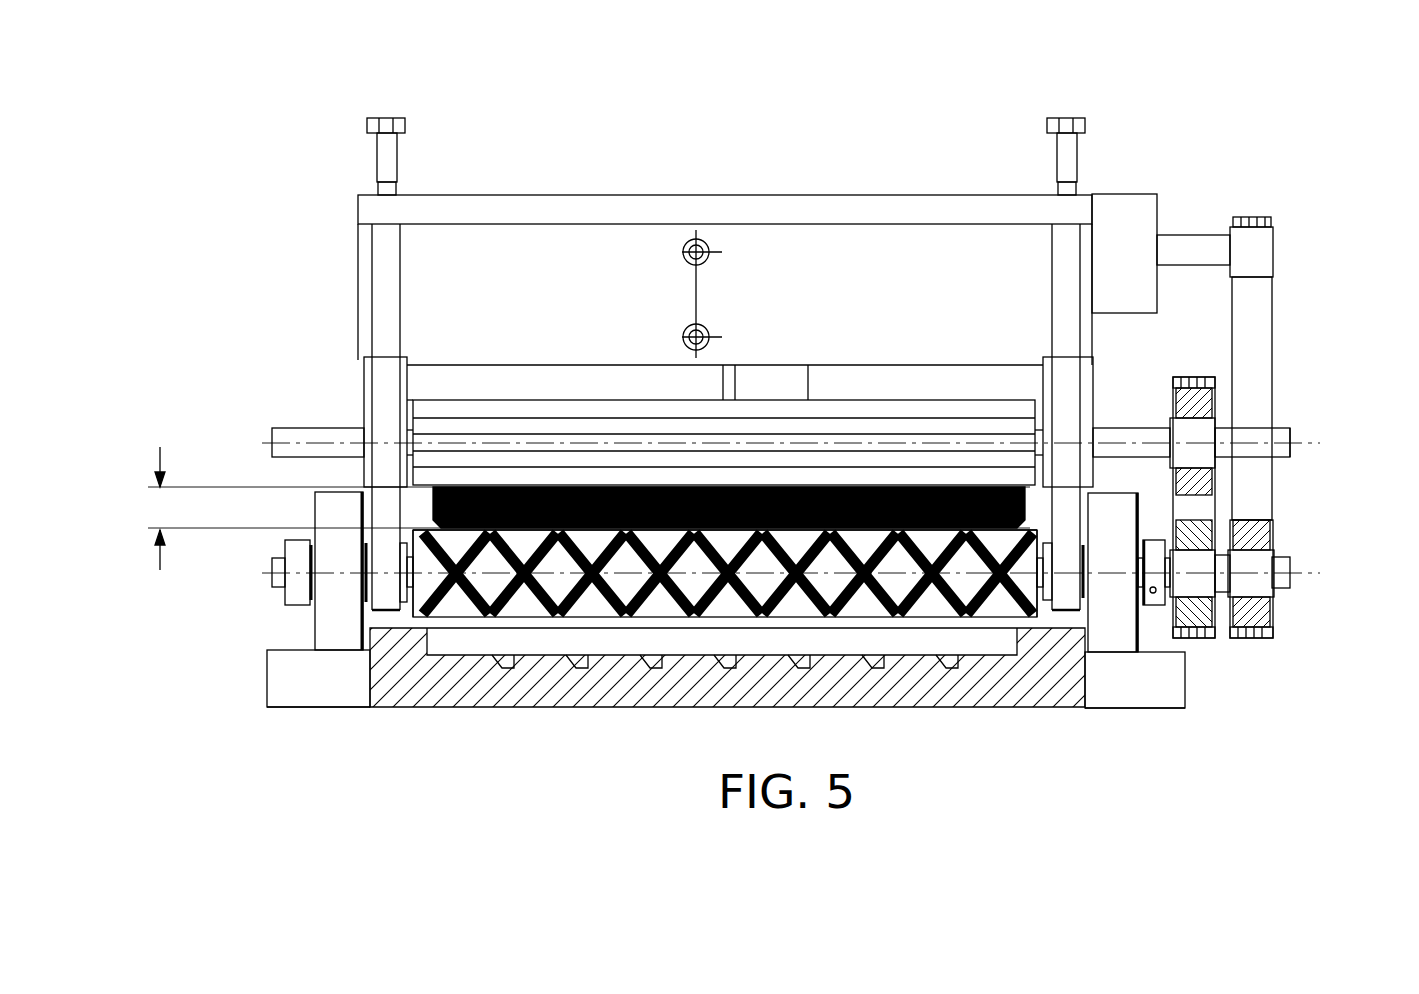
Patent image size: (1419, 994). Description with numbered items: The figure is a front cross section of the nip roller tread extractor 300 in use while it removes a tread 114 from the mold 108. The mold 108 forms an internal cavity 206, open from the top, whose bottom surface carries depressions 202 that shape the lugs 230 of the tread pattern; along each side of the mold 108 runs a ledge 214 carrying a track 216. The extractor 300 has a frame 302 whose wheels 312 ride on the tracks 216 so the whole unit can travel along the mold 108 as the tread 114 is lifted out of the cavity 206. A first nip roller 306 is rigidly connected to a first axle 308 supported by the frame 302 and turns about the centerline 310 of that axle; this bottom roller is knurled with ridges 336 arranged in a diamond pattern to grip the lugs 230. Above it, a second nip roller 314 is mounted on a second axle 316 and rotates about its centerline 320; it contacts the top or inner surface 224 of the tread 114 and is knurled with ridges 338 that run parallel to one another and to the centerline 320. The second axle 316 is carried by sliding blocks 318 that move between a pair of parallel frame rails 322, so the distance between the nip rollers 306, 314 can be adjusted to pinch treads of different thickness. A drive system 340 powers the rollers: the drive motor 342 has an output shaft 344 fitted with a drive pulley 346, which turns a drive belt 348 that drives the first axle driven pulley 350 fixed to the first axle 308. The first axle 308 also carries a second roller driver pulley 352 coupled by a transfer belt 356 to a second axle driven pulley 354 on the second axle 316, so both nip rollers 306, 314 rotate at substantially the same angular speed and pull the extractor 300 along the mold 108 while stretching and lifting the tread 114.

The mold 108 is at (458, 687).
The tread 114 is at (460, 480).
The depressions 202 is at (827, 660).
The cavity 206 is at (977, 638).
The ledge 214 is at (287, 675).
The track 216 is at (287, 650).
The inner surface 224 is at (868, 478).
The lugs 230 is at (590, 532).
The nip roller tread extractor 300 is at (1254, 96).
The frame 302 is at (891, 208).
The first nip roller 306 is at (462, 603).
The first axle 308 is at (1282, 563).
The centerline 310 is at (1312, 575).
The wheels 312 is at (333, 600).
The second nip roller 314 is at (430, 410).
The second axle 316 is at (1257, 437).
The sliding blocks 318 is at (405, 377).
The centerline 320 is at (1303, 443).
The frame rails 322 is at (385, 245).
The ridges 336 is at (700, 580).
The ridges 338 is at (562, 418).
The drive system 340 is at (1292, 698).
The drive motor 342 is at (1117, 217).
The output shaft 344 is at (1182, 250).
The drive pulley 346 is at (1257, 243).
The drive belt 348 is at (1257, 300).
The first axle driven pulley 350 is at (1255, 613).
The second roller driver pulley 352 is at (1193, 537).
The second axle driven pulley 354 is at (1192, 405).
The transfer belt 356 is at (1192, 378).